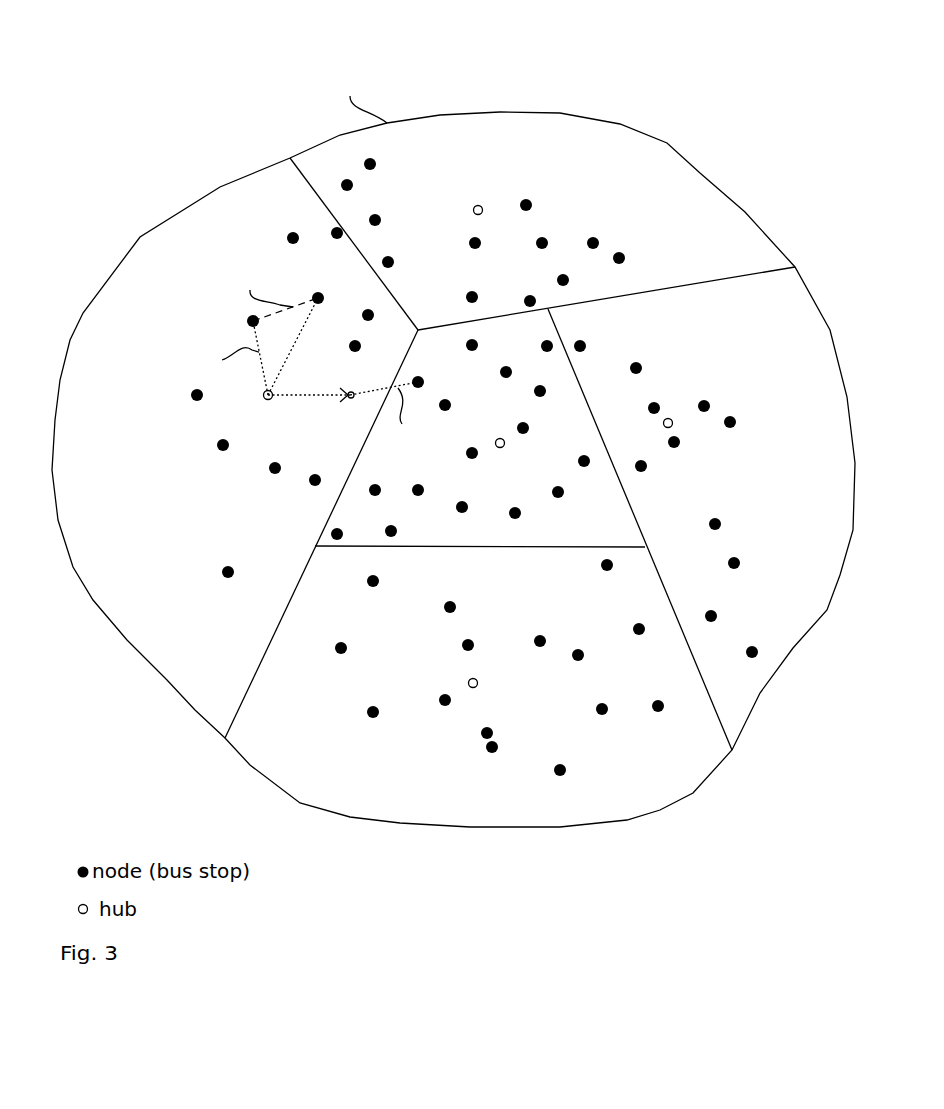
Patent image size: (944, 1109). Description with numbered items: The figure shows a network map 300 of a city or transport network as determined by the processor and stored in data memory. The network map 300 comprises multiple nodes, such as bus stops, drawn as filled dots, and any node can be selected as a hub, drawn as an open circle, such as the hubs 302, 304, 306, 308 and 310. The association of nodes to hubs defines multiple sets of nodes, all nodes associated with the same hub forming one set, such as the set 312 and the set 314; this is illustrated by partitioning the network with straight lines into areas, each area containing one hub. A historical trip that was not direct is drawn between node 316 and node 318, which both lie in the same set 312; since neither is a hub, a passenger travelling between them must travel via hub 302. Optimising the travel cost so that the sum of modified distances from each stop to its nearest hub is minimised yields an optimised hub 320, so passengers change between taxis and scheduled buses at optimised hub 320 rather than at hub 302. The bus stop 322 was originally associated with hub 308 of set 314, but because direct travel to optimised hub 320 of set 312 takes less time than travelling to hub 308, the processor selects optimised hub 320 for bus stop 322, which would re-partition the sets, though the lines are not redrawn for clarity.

The network map 300 is at (98, 82).
The hub 302 is at (264, 397).
The hub 304 is at (473, 211).
The hub 306 is at (663, 425).
The hub 308 is at (503, 447).
The hub 310 is at (476, 687).
The set of nodes 312 is at (218, 671).
The set of nodes 314 is at (600, 542).
The node 316 is at (247, 321).
The node 318 is at (319, 294).
The optimised hub 320 is at (338, 420).
The bus stop 322 is at (419, 377).